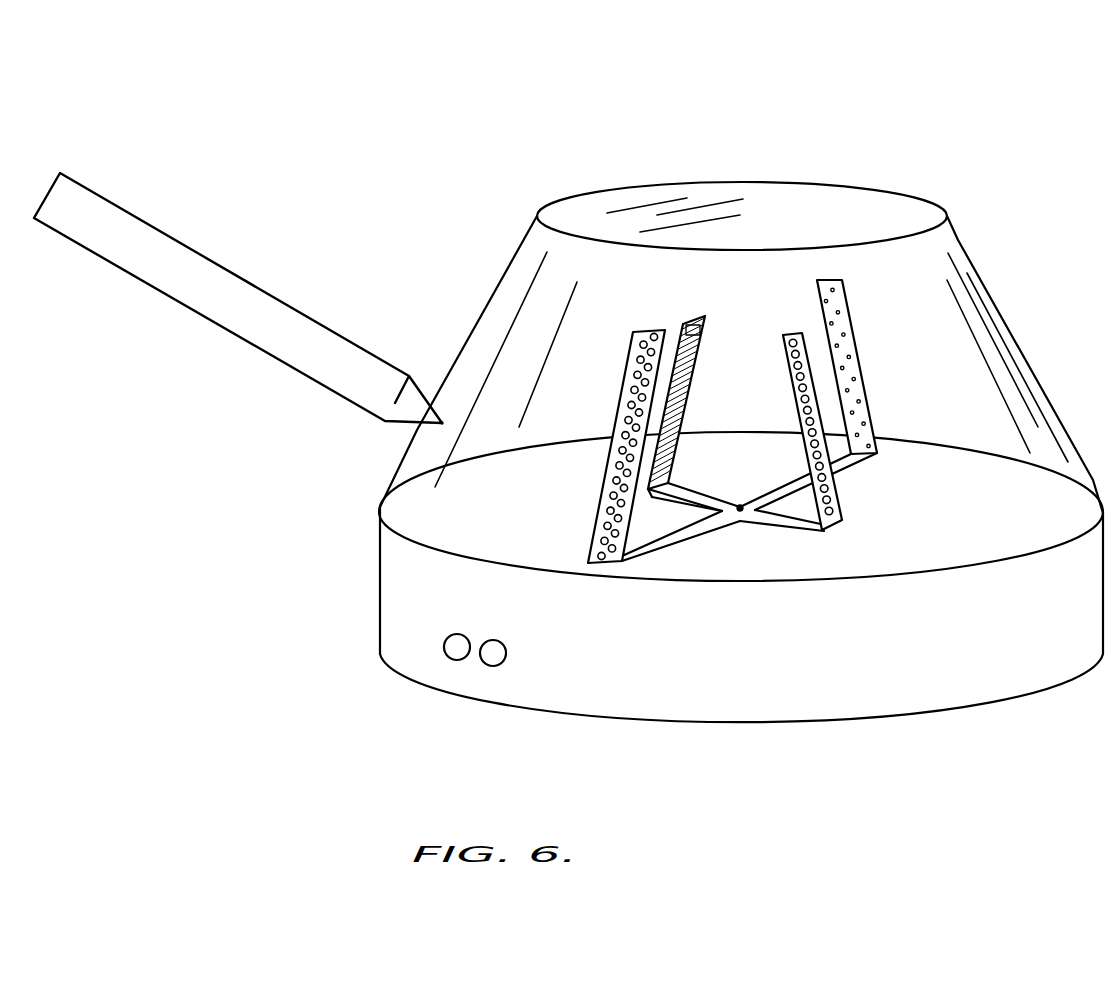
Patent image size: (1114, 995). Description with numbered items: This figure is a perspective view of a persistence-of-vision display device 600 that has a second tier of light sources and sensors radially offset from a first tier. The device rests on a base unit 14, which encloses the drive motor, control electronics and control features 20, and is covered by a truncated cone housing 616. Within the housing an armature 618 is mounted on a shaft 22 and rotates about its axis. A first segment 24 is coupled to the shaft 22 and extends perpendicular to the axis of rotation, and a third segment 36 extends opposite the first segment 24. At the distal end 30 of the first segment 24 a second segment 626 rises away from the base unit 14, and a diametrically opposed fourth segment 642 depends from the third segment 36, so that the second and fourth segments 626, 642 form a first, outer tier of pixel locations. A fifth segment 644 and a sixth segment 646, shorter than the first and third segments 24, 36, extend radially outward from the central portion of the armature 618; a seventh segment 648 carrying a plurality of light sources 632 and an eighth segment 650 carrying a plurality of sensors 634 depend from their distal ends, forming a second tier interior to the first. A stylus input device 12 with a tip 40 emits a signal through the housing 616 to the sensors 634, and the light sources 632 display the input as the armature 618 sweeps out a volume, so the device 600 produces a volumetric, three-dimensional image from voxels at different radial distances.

The display device 600 is at (348, 105).
The truncated cone housing 616 is at (928, 197).
The base unit 14 is at (378, 614).
The control features 20 is at (500, 639).
The stylus input device 12 is at (299, 373).
The tip 40 is at (440, 418).
The first segment 24 is at (672, 548).
The armature 618 is at (714, 524).
The fifth segment 644 is at (687, 485).
The sixth segment 646 is at (785, 526).
The shaft 22 is at (742, 506).
The third segment 36 is at (893, 478).
The distal end 30 is at (578, 554).
The seventh segment 648 is at (704, 316).
The sensors 634 is at (679, 321).
The second segment 626 is at (673, 443).
The light sources 632 is at (634, 352).
The eighth segment 650 is at (781, 337).
The fourth segment 642 is at (867, 390).